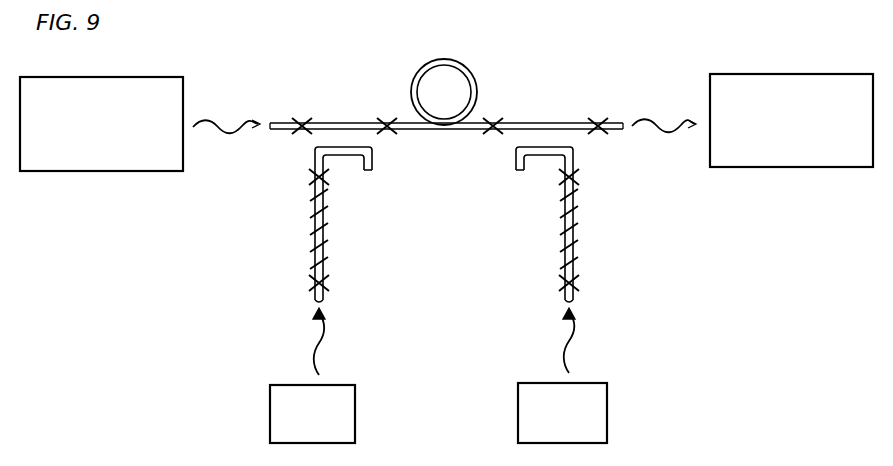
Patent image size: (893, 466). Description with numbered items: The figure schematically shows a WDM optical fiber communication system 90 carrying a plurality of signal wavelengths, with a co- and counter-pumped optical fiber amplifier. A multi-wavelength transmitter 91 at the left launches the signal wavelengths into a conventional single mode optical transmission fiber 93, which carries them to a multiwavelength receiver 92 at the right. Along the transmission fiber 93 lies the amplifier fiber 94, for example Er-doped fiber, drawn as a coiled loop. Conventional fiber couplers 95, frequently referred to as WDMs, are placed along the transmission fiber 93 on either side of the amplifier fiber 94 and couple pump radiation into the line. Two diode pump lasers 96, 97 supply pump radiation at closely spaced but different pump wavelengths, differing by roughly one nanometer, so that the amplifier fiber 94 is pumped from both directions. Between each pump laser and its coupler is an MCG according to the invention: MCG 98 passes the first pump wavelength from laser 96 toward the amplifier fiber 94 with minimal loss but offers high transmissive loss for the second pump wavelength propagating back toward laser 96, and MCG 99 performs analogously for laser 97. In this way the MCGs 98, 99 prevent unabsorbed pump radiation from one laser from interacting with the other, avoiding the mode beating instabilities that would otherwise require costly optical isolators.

The WDM optical fiber communication system 90 is at (298, 65).
The multi-wavelength transmitter 91 is at (128, 172).
The multiwavelength receiver 92 is at (818, 168).
The single mode optical transmission fiber 93 is at (271, 122).
The amplifier fiber 94 is at (409, 89).
The fiber couplers 95 is at (347, 122).
The diode pump laser 96 is at (356, 392).
The diode pump laser 97 is at (608, 390).
The MCG 98 is at (326, 248).
The MCG 99 is at (576, 248).